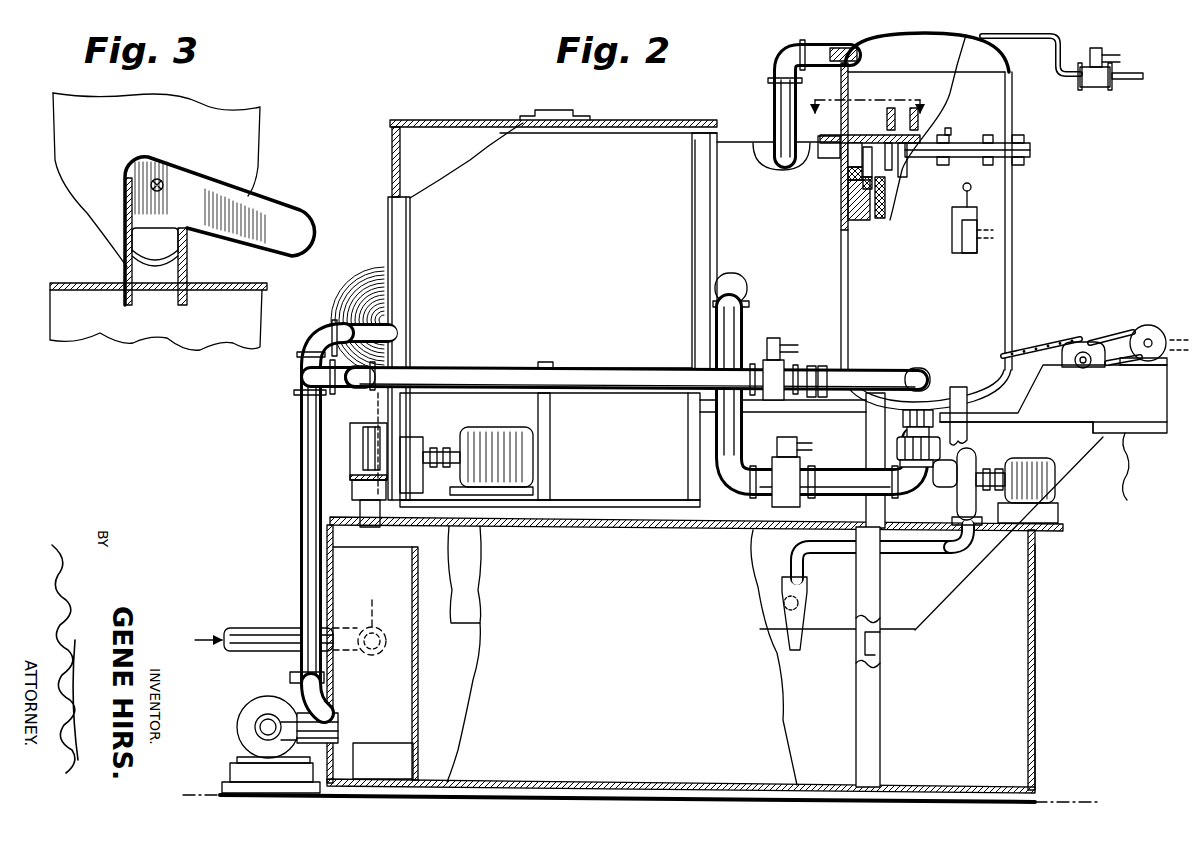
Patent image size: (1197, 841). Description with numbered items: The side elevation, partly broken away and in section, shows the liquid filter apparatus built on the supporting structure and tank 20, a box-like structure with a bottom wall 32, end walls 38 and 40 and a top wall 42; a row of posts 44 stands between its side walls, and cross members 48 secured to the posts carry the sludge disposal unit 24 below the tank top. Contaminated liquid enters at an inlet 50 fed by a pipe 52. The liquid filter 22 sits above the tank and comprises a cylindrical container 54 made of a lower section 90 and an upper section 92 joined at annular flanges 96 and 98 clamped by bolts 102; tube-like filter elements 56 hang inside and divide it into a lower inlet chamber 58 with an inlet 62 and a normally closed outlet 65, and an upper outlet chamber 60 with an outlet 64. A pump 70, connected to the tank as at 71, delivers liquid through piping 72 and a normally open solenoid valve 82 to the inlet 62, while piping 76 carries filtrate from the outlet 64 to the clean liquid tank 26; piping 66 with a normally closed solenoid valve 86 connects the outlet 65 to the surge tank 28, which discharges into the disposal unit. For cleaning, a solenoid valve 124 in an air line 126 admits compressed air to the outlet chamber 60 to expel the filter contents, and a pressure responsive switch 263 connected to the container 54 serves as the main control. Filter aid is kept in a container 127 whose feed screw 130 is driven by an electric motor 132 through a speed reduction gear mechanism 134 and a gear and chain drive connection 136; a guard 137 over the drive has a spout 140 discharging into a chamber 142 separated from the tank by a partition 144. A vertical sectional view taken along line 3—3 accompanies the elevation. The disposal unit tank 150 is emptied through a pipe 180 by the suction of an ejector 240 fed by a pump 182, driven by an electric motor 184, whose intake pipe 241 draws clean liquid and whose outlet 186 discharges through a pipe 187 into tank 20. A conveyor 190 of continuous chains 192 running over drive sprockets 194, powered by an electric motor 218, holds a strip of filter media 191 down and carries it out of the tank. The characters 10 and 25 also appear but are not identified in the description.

In FIG. 2, the section line 3— 3 is at (397, 402).
In FIG. 2, the section line 10- 10 is at (868, 93).
In FIG. 2, the supporting structure and tank 20 is at (1038, 678).
In FIG. 2, the liquid filter 22 is at (838, 260).
In FIG. 2, the sludge disposal unit 24 is at (1085, 470).
In FIG. 3, the plate 25 is at (266, 286).
In FIG. 2, the clean liquid tank 26 is at (782, 167).
In FIG. 2, the surge tank 28 is at (715, 234).
In FIG. 2, the bottom wall 32 is at (826, 786).
In FIG. 2, the end wall 38 is at (1036, 625).
In FIG. 2, the end wall 40 is at (330, 577).
In FIG. 3, the top wall 42 is at (237, 291).
In FIG. 2, the top wall 42 is at (650, 527).
In FIG. 2, the posts 44 is at (878, 735).
In FIG. 2, the cross members 48 is at (879, 645).
In FIG. 2, the inlet 50 is at (359, 623).
In FIG. 2, the pipe 52 is at (262, 628).
In FIG. 2, the container 54 is at (1011, 283).
In FIG. 2, the filter elements 56 is at (862, 212).
In FIG. 2, the inlet chamber 58 is at (862, 197).
In FIG. 2, the outlet chamber 60 is at (948, 92).
In FIG. 2, the inlet 62 is at (925, 368).
In FIG. 2, the outlet 64 is at (858, 55).
In FIG. 2, the normally closed outlet 65 is at (915, 405).
In FIG. 2, the piping 66 is at (858, 463).
In FIG. 2, the pump 70 is at (256, 714).
In FIG. 2, the connection 71 is at (335, 718).
In FIG. 2, the piping 72 is at (299, 481).
In FIG. 2, the piping 76 is at (772, 58).
In FIG. 2, the solenoid valve 82 is at (773, 400).
In FIG. 2, the solenoid valve 86 is at (800, 503).
In FIG. 2, the lower section 90 is at (1006, 188).
In FIG. 2, the upper section 92 is at (1006, 117).
In FIG. 2, the annular flange 96 is at (1030, 146).
In FIG. 2, the annular flange 98 is at (1030, 153).
In FIG. 2, the bolts 102 is at (947, 136).
In FIG. 2, the solenoid valve 124 is at (1103, 53).
In FIG. 2, the air line 126 is at (1140, 80).
In FIG. 3, the filter aid container 127 is at (220, 115).
In FIG. 2, the filter aid container 127 is at (647, 147).
In FIG. 3, the feed screw 130 is at (158, 234).
In FIG. 2, the electric motor 132 is at (508, 420).
In FIG. 2, the speed reduction gear mechanism 134 is at (418, 438).
In FIG. 2, the gear and chain drive connection 136 is at (352, 440).
In FIG. 3, the guard 137 is at (214, 180).
In FIG. 2, the guard 137 is at (362, 462).
In FIG. 3, the spout 140 is at (124, 272).
In FIG. 2, the spout 140 is at (385, 522).
In FIG. 2, the chamber 142 is at (397, 690).
In FIG. 2, the partition 144 is at (419, 662).
In FIG. 2, the tank 150 is at (948, 584).
In FIG. 2, the pipe 180 is at (800, 588).
In FIG. 2, the pump 182 is at (968, 455).
In FIG. 2, the electric motor 184 is at (1027, 458).
In FIG. 2, the outlet 186 is at (966, 548).
In FIG. 2, the pipe 187 is at (908, 552).
In FIG. 2, the conveyor 190 is at (1076, 335).
In FIG. 2, the strip of filter media 191 is at (1128, 470).
In FIG. 2, the continuous chains 192 is at (1040, 352).
In FIG. 2, the drive sprockets 194 is at (1090, 348).
In FIG. 2, the electric motor 218 is at (1152, 327).
In FIG. 2, the ejector 240 is at (784, 613).
In FIG. 2, the pipe 241 is at (945, 487).
In FIG. 2, the pressure responsive switch 263 is at (951, 240).